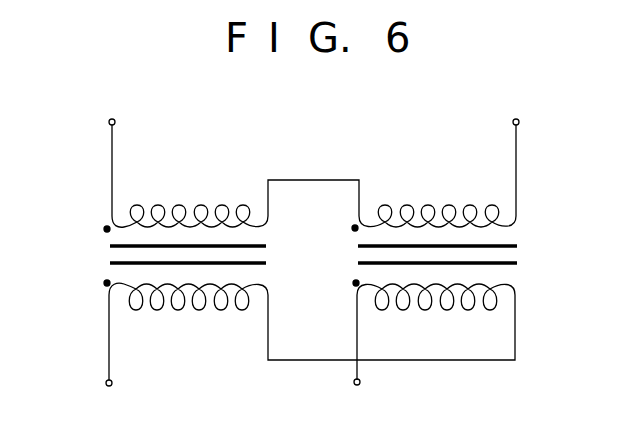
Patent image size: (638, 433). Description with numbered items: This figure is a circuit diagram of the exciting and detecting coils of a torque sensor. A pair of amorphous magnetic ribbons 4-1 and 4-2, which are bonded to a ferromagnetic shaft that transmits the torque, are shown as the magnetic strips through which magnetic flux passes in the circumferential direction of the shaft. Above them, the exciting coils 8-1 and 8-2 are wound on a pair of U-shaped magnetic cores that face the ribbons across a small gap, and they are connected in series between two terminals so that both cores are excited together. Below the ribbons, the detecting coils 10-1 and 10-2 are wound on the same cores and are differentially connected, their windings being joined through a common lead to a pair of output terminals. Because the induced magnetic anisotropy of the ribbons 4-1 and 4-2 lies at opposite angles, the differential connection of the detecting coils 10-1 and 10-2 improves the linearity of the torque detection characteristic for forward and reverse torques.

The exciting coil 8-1 is at (184, 203).
The exciting coil 8-2 is at (438, 210).
The amorphous magnetic ribbon 4-1 is at (110, 253).
The amorphous magnetic ribbon 4-2 is at (520, 251).
The detecting coil 10-1 is at (168, 310).
The detecting coil 10-2 is at (438, 300).